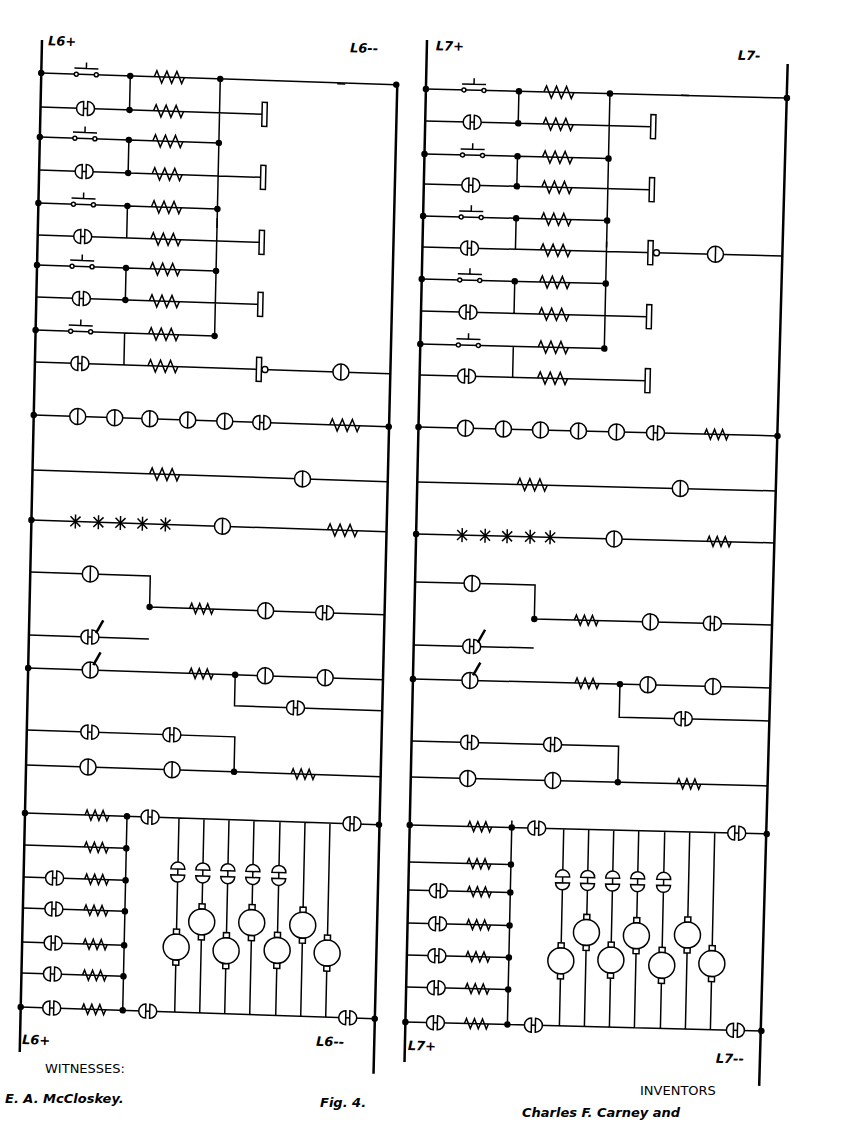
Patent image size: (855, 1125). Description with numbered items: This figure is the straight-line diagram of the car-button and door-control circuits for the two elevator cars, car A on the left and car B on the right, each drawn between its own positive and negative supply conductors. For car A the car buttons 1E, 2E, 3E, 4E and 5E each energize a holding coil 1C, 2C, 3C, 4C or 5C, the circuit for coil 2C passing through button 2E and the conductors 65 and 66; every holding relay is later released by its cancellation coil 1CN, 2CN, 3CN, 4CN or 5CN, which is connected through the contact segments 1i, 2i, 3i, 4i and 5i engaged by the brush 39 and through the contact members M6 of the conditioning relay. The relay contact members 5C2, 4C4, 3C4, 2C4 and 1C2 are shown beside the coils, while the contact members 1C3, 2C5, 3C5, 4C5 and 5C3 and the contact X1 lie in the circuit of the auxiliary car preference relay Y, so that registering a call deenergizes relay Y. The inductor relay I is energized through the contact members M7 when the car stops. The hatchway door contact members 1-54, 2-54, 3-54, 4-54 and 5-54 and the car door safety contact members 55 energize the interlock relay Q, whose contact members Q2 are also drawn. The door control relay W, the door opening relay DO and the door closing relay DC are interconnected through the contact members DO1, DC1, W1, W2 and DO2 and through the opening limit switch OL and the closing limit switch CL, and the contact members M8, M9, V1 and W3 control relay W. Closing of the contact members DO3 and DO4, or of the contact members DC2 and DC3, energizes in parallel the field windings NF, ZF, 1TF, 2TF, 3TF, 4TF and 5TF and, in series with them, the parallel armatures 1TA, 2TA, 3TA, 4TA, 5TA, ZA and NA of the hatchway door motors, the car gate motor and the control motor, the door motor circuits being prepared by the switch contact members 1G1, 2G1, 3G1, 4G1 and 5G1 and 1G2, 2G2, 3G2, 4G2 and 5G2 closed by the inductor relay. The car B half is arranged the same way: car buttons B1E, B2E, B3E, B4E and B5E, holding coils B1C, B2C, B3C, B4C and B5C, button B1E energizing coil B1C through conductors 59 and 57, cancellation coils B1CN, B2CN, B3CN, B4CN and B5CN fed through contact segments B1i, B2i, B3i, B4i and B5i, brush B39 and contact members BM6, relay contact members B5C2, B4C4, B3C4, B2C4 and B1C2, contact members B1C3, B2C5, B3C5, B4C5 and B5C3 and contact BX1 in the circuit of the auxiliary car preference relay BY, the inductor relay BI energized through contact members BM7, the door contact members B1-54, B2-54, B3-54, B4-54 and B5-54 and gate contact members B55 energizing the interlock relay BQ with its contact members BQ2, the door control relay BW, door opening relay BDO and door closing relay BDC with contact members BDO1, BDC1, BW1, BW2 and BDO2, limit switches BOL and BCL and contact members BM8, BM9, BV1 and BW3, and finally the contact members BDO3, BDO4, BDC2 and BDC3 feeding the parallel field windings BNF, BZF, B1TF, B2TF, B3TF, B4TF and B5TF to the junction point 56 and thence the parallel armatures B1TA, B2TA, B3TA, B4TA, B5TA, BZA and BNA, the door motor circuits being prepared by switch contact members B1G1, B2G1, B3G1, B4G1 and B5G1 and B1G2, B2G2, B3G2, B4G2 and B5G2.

The car button 5E is at (95, 66).
The holding coil 5C is at (174, 70).
The relay coil 5C2 is at (90, 101).
The cancellation coil 5CN is at (168, 104).
The contact segment 5i is at (274, 114).
The car button 4E is at (94, 130).
The holding coil 4C is at (173, 134).
The relay coil 4C4 is at (86, 164).
The cancellation coil 4CN is at (167, 167).
The contact segment 4i is at (272, 177).
The car button 3E is at (92, 196).
The holding coil 3C is at (171, 200).
The relay coil 3C4 is at (86, 229).
The cancellation coil 3CN is at (166, 232).
The contact segment 3i is at (271, 242).
The car button 2E is at (91, 258).
The holding coil 2C is at (170, 262).
The relay coil 2C4 is at (84, 291).
The cancellation coil 2CN is at (164, 294).
The contact segment 2i is at (270, 304).
The car button 1E is at (90, 323).
The holding coil 1C is at (168, 327).
The relay coil 1C2 is at (93, 356).
The cancellation coil 1CN is at (163, 359).
The contact segment 1i is at (265, 362).
The brush 39 is at (277, 364).
The contact members M6 is at (340, 365).
The conductor 66 is at (342, 75).
The conductor 65 is at (221, 222).
The contact members 1C3 is at (74, 408).
The contact members 2C5 is at (112, 409).
The contact 3C5 is at (150, 410).
The contact 4C5 is at (187, 412).
The contact 5C3 is at (226, 413).
The relay coil X1 is at (264, 413).
The auxiliary car preference relay Y is at (345, 416).
The inductor relay I is at (164, 465).
The contact members M7 is at (312, 471).
The hatchway door contact members 1-54 is at (71, 513).
The hatchway door contact members 2-54 is at (93, 530).
The hatchway door contact members 3-54 is at (119, 514).
The hatchway door contact members 4-54 is at (138, 531).
The hatchway door contact members 5-54 is at (167, 516).
The car door safety contact members 55 is at (231, 518).
The door and gate interlock relay Q is at (342, 521).
The contact Q2 is at (99, 567).
The door closing relay DC is at (202, 599).
The contact members DO1 is at (269, 603).
The relay coil W1 is at (327, 604).
The closing limit switch CL is at (75, 631).
The opening limit switch OL is at (73, 670).
The door opening relay DO is at (201, 664).
The contact members DC1 is at (267, 667).
The contact members W2 is at (328, 670).
The contact members DO2 is at (310, 702).
The contact members M8 is at (87, 724).
The relay coil W3 is at (173, 726).
The contact members M9 is at (97, 759).
The contact members V1 is at (180, 762).
The door control relay W is at (303, 765).
The field winding NF is at (95, 806).
The contact members DO3 is at (157, 809).
The contact members DC2 is at (348, 815).
The field winding ZF is at (91, 838).
The switch contact members 5G2 is at (46, 869).
The field winding 5TF is at (95, 870).
The switch contact members 4G2 is at (46, 900).
The field winding 4TF is at (94, 901).
The switch contact members 3G2 is at (45, 934).
The field winding 3TF is at (94, 935).
The switch contact members 2G2 is at (44, 965).
The field winding 2TF is at (93, 966).
The switch contact members 1G2 is at (44, 999).
The field winding 1TF is at (93, 1000).
The contact members DC3 is at (142, 1001).
The contact members DO4 is at (340, 1008).
The switch contact members 1G1 is at (165, 861).
The switch contact members 2G1 is at (196, 862).
The switch contact members 3G1 is at (221, 863).
The switch contact members 4G1 is at (245, 864).
The switch contact members 5G1 is at (272, 865).
The armature 1TA is at (153, 958).
The armature 2TA is at (199, 917).
The armature 3TA is at (209, 962).
The armature 4TA is at (249, 919).
The armature 5TA is at (259, 963).
The armature ZA is at (301, 921).
The armature NA is at (327, 949).
The car button B5E is at (487, 81).
The holding coil B5C is at (564, 85).
The relay coil B5C2 is at (463, 114).
The cancellation coil B5CN is at (556, 117).
The contact segment B5i is at (668, 125).
The car button B4E is at (485, 147).
The holding coil B4C is at (562, 150).
The relay coil B4C4 is at (461, 177).
The cancellation coil B4CN is at (555, 180).
The contact segment B4i is at (667, 188).
The car button B3E is at (484, 209).
The holding coil B3C is at (561, 212).
The relay coil B3C4 is at (459, 240).
The cancellation coil B3CN is at (553, 243).
The contact segment B3i is at (666, 247).
The brush B39 is at (672, 257).
The contact members BM6 is at (724, 246).
The conductor 59 is at (611, 243).
The conductor 57 is at (683, 98).
The car button B2E is at (483, 272).
The holding coil B2C is at (560, 275).
The relay coil B2C4 is at (458, 304).
The cancellation coil B2CN is at (552, 307).
The contact segment B2i is at (664, 315).
The car button B1E is at (481, 337).
The holding coil B1C is at (558, 340).
The relay coil B1C2 is at (456, 368).
The cancellation coil B1CN is at (550, 371).
The contact segment B1i is at (663, 379).
The contact members B1C3 is at (460, 420).
The contact members B2C5 is at (502, 421).
The contact B3C5 is at (543, 422).
The contact B4C5 is at (573, 437).
The contact B5C3 is at (613, 423).
The relay coil BX1 is at (658, 424).
The auxiliary car preference relay BY is at (713, 424).
The inductor relay BI is at (532, 475).
The contact members BM7 is at (695, 480).
The hatchway door contact members B1-54 is at (446, 529).
The hatchway door contact members B2-54 is at (466, 524).
The door contact members B3-54 is at (510, 531).
The hatchway door contact members B4-54 is at (517, 525).
The hatchway door contact members B5-54 is at (565, 533).
The gate contact members B55 is at (616, 530).
The gate and door interlock relay BQ is at (717, 531).
The contact BQ2 is at (477, 575).
The door closing relay BDC is at (576, 610).
The contact members BDO1 is at (645, 614).
The relay coil BW1 is at (711, 615).
The closing limit switch BCL is at (458, 639).
The door opening limit switch BOL is at (452, 680).
The door opening relay BDO is at (579, 674).
The contact members BDC1 is at (644, 676).
The contact members BW2 is at (715, 678).
The self-holding contact members BDO2 is at (700, 725).
The contact members BM8 is at (468, 734).
The relay coil BW3 is at (553, 736).
The contact members BM9 is at (483, 771).
The contact members BV1 is at (565, 773).
The door control relay BW is at (687, 774).
The field winding BNF is at (464, 817).
The junction point 56 is at (503, 815).
The contact members BDO3 is at (549, 820).
The contact members BDC2 is at (722, 823).
The field winding BZF is at (461, 855).
The switch contact members B5G2 is at (428, 883).
The field winding B5TF is at (473, 883).
The switch contact members B4G2 is at (427, 916).
The field winding B4TF is at (472, 916).
The switch contact members B3G2 is at (427, 948).
The field winding B3TF is at (472, 948).
The switch contact members B2G2 is at (426, 980).
The field winding B2TF is at (471, 980).
The switch contact members B1G2 is at (425, 1015).
The field winding B1TF is at (470, 1015).
The contact members BDC3 is at (541, 1033).
The contact members BDO4 is at (705, 1038).
The switch contact members B1G1 is at (577, 869).
The switch contact members B2G1 is at (603, 883).
The switch contact members B3G1 is at (627, 884).
The switch contact members B4G1 is at (663, 872).
The switch contact members B5G1 is at (688, 883).
The armature B1TA is at (569, 953).
The armature B2TA is at (595, 920).
The armature B3TA is at (621, 962).
The armature B4TA is at (666, 924).
The armature B5TA is at (690, 970).
The armature BZA is at (714, 926).
The armature BNA is at (740, 948).